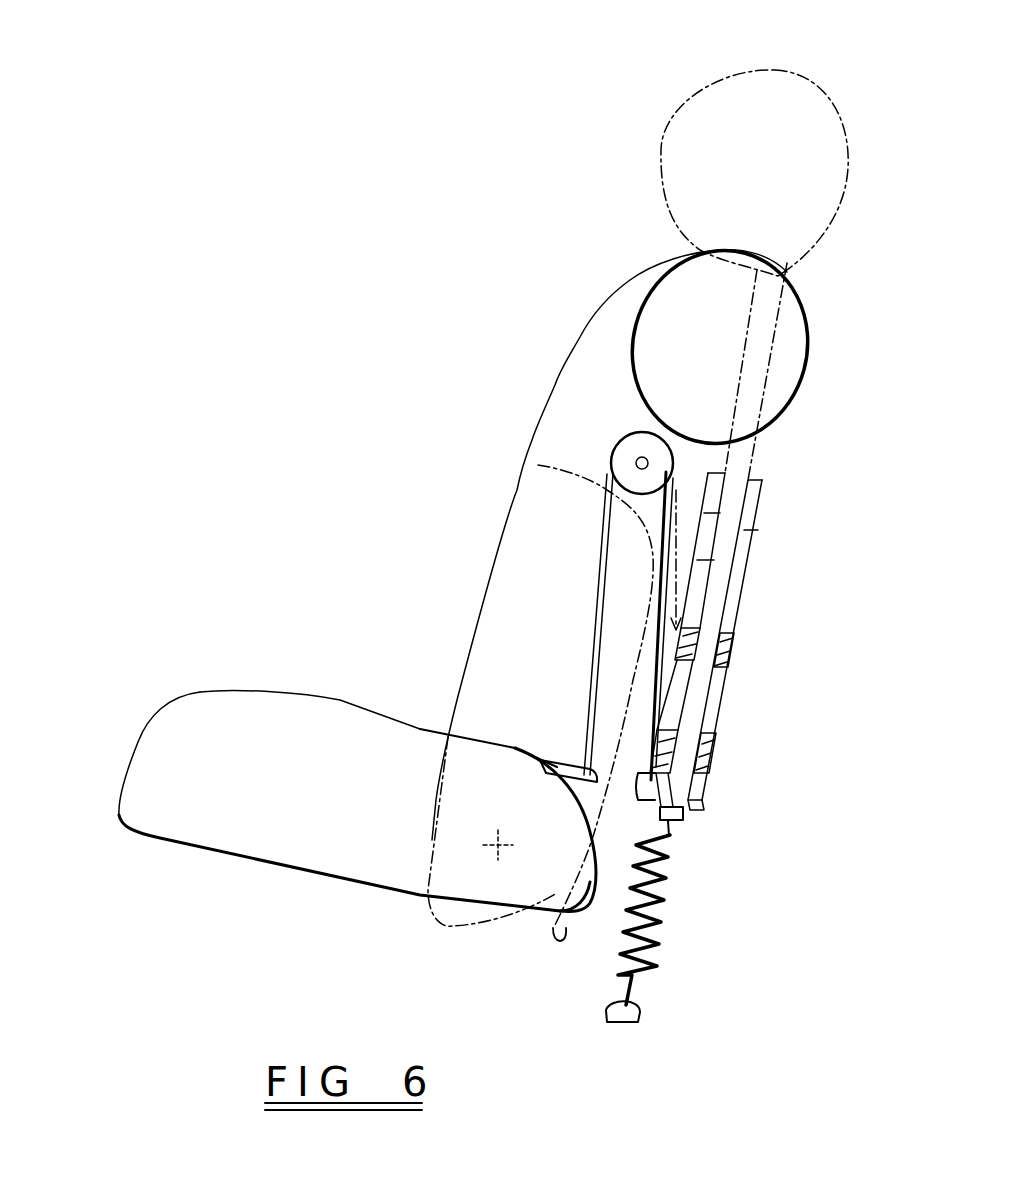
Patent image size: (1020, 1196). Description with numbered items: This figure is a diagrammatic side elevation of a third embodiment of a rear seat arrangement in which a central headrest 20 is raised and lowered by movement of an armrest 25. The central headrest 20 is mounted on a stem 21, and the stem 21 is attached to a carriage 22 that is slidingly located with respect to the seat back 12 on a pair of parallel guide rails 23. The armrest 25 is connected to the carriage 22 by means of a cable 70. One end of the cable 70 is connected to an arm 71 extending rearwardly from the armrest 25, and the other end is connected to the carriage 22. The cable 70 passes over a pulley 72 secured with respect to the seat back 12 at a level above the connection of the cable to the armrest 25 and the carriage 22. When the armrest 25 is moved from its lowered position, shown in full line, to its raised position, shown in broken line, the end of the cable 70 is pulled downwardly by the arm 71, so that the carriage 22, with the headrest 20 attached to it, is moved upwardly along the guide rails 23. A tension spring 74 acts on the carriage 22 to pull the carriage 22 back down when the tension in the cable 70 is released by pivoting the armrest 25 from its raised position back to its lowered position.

The seat back 12 is at (580, 337).
The central headrest 20 is at (702, 112).
The stem 21 is at (752, 400).
The carriage 22 is at (690, 652).
The guide rails 23 is at (752, 557).
The armrest 25 is at (542, 542).
The cable 70 is at (598, 640).
The arm 71 is at (552, 752).
The pulley 72 is at (614, 447).
The tension spring 74 is at (662, 897).